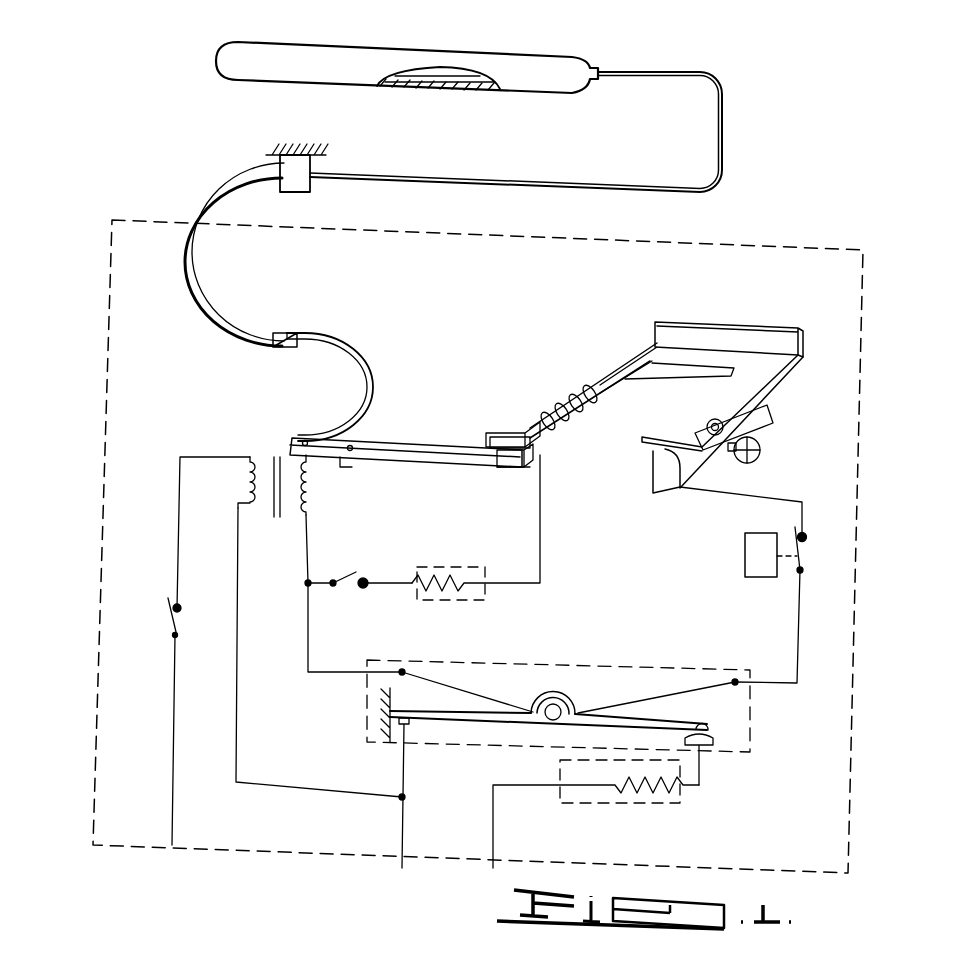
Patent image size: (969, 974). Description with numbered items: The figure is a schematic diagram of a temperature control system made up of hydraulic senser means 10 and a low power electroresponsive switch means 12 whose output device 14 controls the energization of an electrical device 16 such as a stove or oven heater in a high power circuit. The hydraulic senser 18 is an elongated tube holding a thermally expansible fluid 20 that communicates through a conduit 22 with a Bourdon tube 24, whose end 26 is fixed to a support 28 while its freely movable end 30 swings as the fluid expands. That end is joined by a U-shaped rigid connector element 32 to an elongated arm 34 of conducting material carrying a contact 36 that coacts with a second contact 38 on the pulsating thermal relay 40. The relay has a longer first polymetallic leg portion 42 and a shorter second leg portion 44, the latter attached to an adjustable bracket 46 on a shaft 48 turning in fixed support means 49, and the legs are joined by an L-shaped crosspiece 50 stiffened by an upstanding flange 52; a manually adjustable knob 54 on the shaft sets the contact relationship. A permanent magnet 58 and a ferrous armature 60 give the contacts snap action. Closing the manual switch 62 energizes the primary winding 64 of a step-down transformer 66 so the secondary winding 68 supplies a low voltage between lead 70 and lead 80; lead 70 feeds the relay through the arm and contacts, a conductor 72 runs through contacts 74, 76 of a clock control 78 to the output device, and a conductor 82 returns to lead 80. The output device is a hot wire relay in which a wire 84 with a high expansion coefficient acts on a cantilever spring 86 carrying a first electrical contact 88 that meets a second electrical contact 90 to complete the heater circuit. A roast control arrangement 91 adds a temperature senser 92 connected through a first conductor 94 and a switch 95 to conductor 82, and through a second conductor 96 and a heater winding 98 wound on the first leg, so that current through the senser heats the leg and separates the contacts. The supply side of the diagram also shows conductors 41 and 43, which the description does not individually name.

The hydraulic senser means 10 is at (749, 127).
The low power electroresponsive switch means 12 is at (83, 777).
The output device 14 is at (542, 665).
The electrical device 16 is at (628, 806).
The hydraulic senser 18 is at (338, 48).
The thermally expansible fluid 20 is at (445, 83).
The conduit 22 is at (518, 178).
The Bourdon tube 24 is at (275, 243).
The end of Bourdon tube 26 is at (272, 168).
The support 28 is at (304, 186).
The freely movable end 30 is at (268, 350).
The U-shaped rigid connector element 32 is at (372, 388).
The elongated arm 34 is at (412, 458).
The contact 36 is at (497, 468).
The second contact 38 is at (497, 437).
The pulsating thermal relay 40 is at (721, 322).
The conductor 41 is at (403, 818).
The first polymetallic leg portion 42 is at (613, 376).
The conductor 43 is at (494, 822).
The second polymetallic leg portion 44 is at (768, 388).
The adjustable bracket 46 is at (700, 470).
The shaft 48 is at (758, 430).
The fixed support means 49 is at (707, 425).
The L-shaped crosspiece 50 is at (710, 360).
The upstanding flange 52 is at (750, 340).
The manually adjustable knob 54 is at (770, 448).
The permanent magnet 58 is at (518, 432).
The ferrous armature 60 is at (500, 470).
The manual switch 62 is at (163, 628).
The primary winding 64 is at (246, 485).
The step-down transformer 66 is at (282, 528).
The secondary winding 68 is at (318, 490).
The lead 70 is at (360, 470).
The conductor 72 is at (803, 512).
The contact 74 is at (806, 537).
The contact 76 is at (803, 562).
The clock control 78 is at (743, 550).
The lead 80 is at (312, 522).
The conductor 82 is at (308, 640).
The wire 84 is at (620, 705).
The cantilever spring 86 is at (600, 730).
The first electrical contact 88 is at (703, 727).
The second electrical contact 90 is at (716, 750).
The roast control arrangement 91 is at (564, 504).
The temperature senser 92 is at (452, 566).
The first conductor 94 is at (390, 586).
The switch 95 is at (358, 569).
The second conductor 96 is at (541, 530).
The heater winding 98 is at (557, 403).